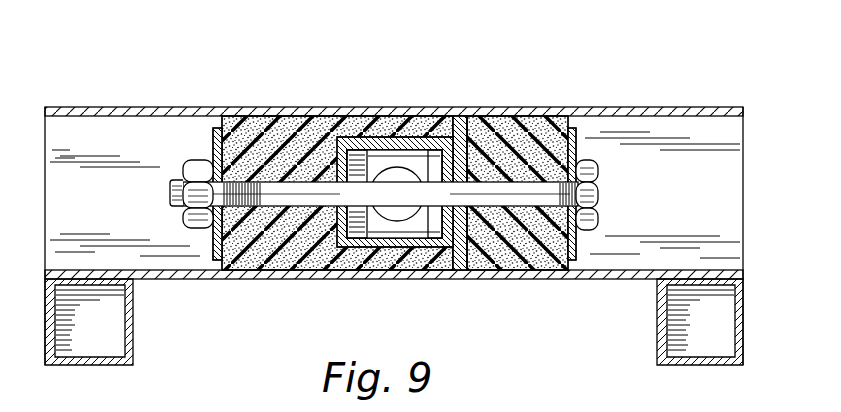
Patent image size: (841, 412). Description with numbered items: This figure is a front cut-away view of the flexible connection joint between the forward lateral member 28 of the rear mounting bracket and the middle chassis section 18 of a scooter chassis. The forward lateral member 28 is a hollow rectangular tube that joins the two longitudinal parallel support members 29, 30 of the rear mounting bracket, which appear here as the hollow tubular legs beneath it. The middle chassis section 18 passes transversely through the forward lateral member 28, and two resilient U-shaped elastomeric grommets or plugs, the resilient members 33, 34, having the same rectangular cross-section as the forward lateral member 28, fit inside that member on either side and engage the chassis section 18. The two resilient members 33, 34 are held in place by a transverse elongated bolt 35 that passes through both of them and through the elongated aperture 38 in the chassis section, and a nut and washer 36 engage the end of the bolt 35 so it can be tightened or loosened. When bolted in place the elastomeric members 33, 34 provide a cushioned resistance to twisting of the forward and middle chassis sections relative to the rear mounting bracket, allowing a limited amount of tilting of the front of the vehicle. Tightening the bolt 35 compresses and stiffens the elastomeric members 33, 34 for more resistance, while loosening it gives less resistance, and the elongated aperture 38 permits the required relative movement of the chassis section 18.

The middle chassis section 18 is at (367, 142).
The forward lateral member 28 is at (62, 107).
The longitudinal parallel support member 29 is at (133, 330).
The longitudinal parallel support member 30 is at (657, 325).
The resilient elastomeric member 33 is at (508, 118).
The resilient elastomeric member 34 is at (245, 133).
The transverse elongated bolt 35 is at (600, 196).
The nut and washer 36 is at (198, 160).
The elongated aperture 38 is at (462, 127).